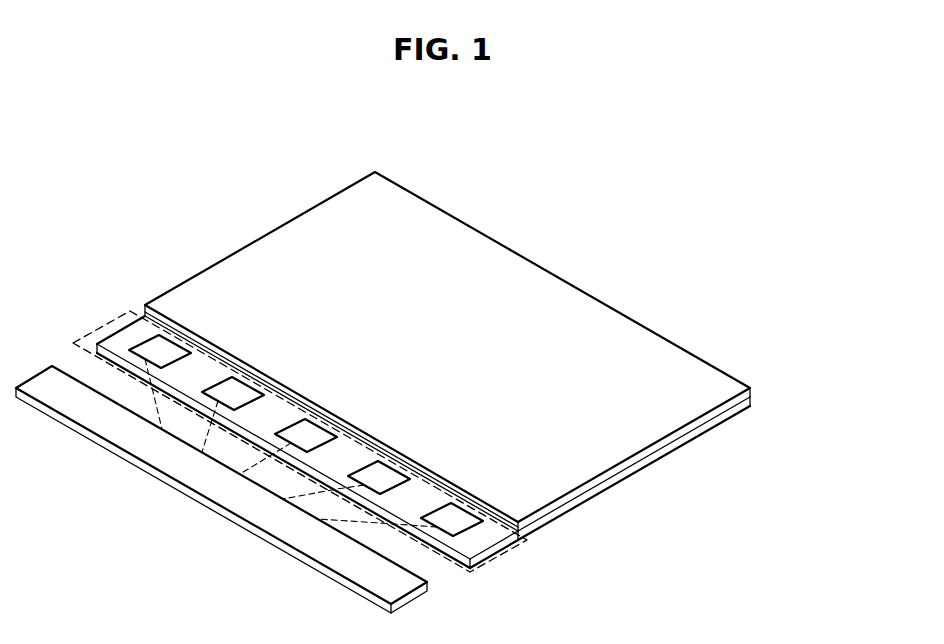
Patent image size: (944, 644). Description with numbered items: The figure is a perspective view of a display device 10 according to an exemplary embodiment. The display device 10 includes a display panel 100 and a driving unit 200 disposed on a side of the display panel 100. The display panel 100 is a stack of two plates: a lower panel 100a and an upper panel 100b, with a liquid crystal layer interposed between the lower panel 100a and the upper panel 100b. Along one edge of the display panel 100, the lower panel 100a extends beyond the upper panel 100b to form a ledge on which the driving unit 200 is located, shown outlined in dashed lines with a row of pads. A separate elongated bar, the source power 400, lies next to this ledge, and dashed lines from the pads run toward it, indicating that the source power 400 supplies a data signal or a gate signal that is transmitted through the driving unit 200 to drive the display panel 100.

The display device 10 is at (419, 145).
The display panel 100 is at (828, 347).
The lower panel 100a is at (692, 432).
The upper panel 100b is at (692, 365).
The driving unit 200 is at (503, 554).
The source power 400 is at (213, 487).